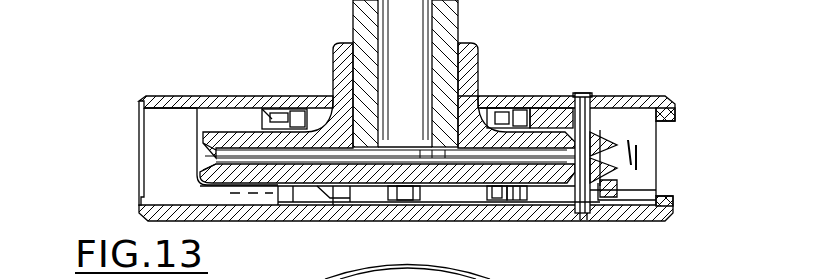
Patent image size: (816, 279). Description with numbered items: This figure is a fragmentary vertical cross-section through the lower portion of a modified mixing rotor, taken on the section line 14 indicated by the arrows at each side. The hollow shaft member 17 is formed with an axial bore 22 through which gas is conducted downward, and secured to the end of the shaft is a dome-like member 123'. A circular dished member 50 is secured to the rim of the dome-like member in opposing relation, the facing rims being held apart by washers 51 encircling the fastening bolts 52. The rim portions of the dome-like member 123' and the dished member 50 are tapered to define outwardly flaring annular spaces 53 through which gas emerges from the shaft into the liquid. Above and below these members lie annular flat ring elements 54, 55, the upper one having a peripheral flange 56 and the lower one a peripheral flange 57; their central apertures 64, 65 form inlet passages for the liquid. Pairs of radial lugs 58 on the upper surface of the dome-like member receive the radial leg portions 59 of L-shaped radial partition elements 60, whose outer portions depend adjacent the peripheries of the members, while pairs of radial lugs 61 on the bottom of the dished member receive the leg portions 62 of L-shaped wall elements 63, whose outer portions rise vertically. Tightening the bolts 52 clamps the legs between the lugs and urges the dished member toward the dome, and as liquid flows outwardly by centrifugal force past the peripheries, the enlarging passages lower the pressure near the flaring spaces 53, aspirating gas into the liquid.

The section line 14— 14 is at (81, 170).
The shaft member 17 is at (456, 12).
The axial bore 22 is at (386, 32).
The circular dished member 50 is at (457, 178).
The washers 51 is at (612, 157).
The fastening bolts 52 is at (587, 108).
The outwardly flaring annular spaces 53 is at (207, 160).
The annular flat ring element 54 is at (200, 100).
The annular flat ring element 55 is at (245, 212).
The peripheral flange 56 is at (677, 114).
The peripheral flange 57 is at (676, 197).
The radial lugs 58 is at (528, 126).
The radial leg portions 59 is at (537, 128).
The L-shaped radial partition elements 60 is at (650, 144).
The radial lugs 61 is at (512, 192).
The leg portions 62 is at (232, 198).
The L-shaped wall elements 63 is at (160, 125).
The central aperture 64 is at (303, 108).
The central aperture 65 is at (327, 208).
The dome-like member 123' is at (502, 75).